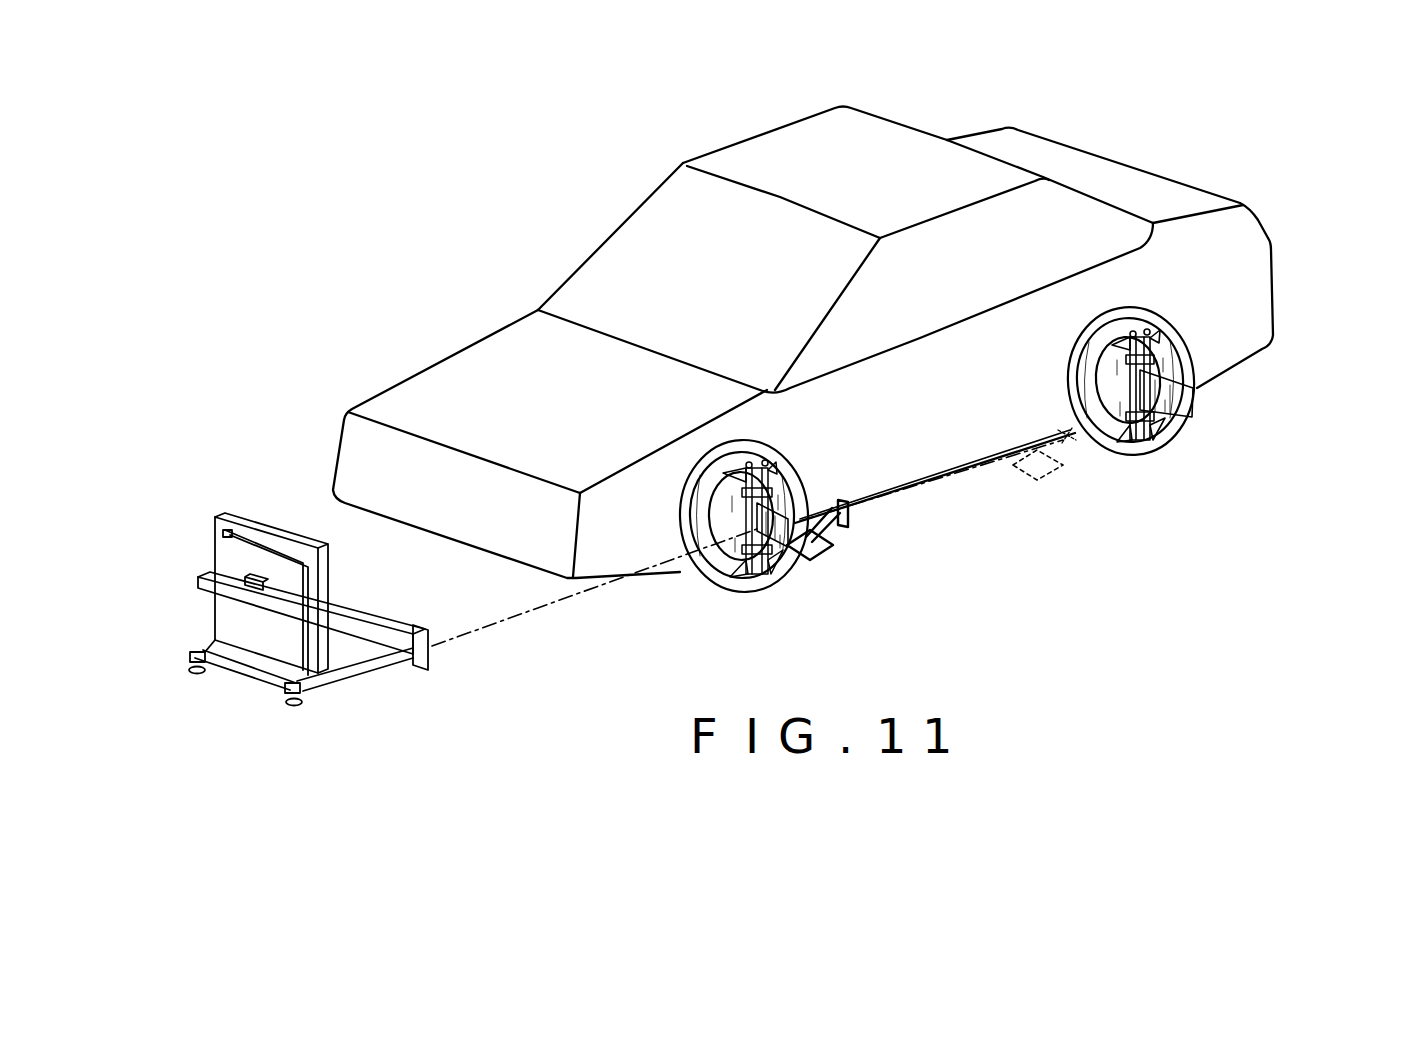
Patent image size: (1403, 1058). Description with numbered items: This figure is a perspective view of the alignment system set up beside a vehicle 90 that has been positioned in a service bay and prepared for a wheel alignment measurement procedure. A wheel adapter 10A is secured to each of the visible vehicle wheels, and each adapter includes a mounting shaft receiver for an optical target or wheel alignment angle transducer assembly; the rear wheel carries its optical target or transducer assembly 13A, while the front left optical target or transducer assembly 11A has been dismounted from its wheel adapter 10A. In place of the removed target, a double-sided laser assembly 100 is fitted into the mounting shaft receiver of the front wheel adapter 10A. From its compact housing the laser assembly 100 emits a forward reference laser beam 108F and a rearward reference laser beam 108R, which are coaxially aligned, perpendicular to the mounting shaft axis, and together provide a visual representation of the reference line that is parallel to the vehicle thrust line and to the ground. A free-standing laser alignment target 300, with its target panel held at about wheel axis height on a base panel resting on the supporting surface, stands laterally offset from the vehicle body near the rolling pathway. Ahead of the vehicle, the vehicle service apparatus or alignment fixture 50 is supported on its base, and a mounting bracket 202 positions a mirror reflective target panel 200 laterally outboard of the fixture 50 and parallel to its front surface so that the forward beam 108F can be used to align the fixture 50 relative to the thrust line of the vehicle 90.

The vehicle 90 is at (1120, 138).
The wheel adapter 10A is at (770, 486).
The optical target or wheel alignment angle transducer assembly 13A is at (1160, 451).
The optical target or wheel alignment angle transducer assembly 11A is at (744, 588).
The laser assembly 100 is at (742, 497).
The free-standing laser alignment target 300 is at (860, 535).
The forward reference laser beam 108F is at (563, 602).
The rearward reference laser beam 108R is at (937, 475).
The vehicle service apparatus or alignment fixture 50 is at (253, 497).
The mirror reflective target panel 200 is at (432, 657).
The mounting bracket 202 is at (398, 653).